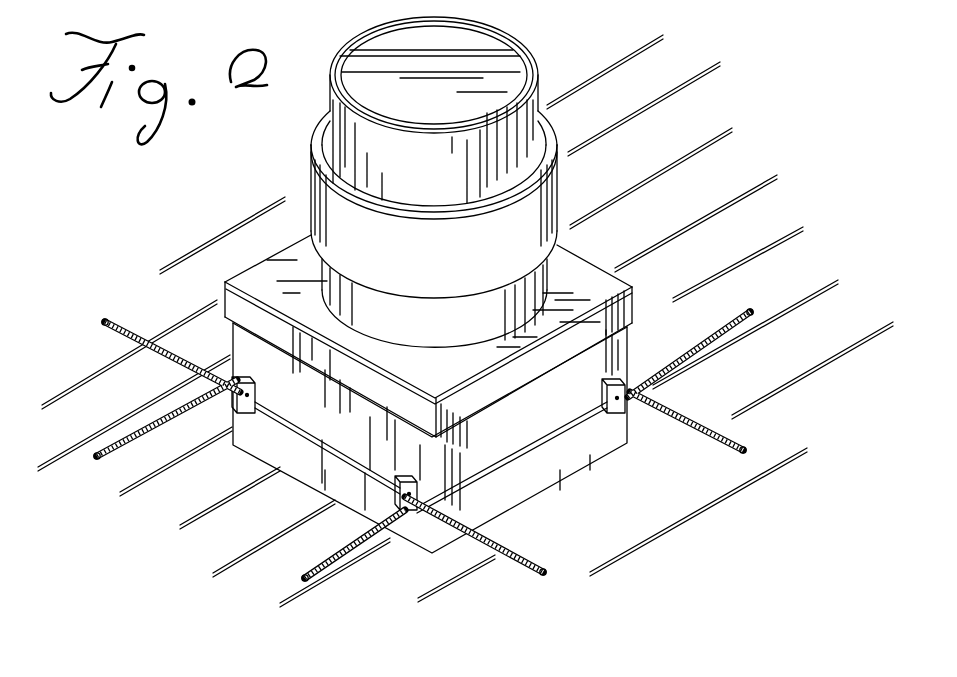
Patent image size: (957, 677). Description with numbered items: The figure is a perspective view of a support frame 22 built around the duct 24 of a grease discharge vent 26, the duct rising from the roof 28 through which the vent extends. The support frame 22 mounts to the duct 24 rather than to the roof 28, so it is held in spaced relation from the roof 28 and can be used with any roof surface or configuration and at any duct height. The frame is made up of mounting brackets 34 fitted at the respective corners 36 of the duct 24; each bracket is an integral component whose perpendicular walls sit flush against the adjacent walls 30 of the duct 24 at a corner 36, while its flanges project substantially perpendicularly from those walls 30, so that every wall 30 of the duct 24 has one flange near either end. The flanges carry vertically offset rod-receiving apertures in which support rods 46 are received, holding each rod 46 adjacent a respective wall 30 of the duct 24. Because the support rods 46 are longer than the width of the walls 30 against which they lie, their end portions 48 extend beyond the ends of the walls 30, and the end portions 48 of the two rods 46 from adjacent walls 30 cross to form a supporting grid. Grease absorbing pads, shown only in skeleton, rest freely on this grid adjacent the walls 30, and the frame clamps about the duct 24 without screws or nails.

The support frame 22 is at (403, 553).
The duct 24 is at (589, 249).
The grease discharge vent 26 is at (562, 182).
The roof 28 is at (727, 148).
The walls 30 is at (633, 287).
The mounting brackets 34 is at (220, 410).
The corners 36 is at (231, 339).
The support rods 46 is at (287, 427).
The end portions 48 is at (108, 324).